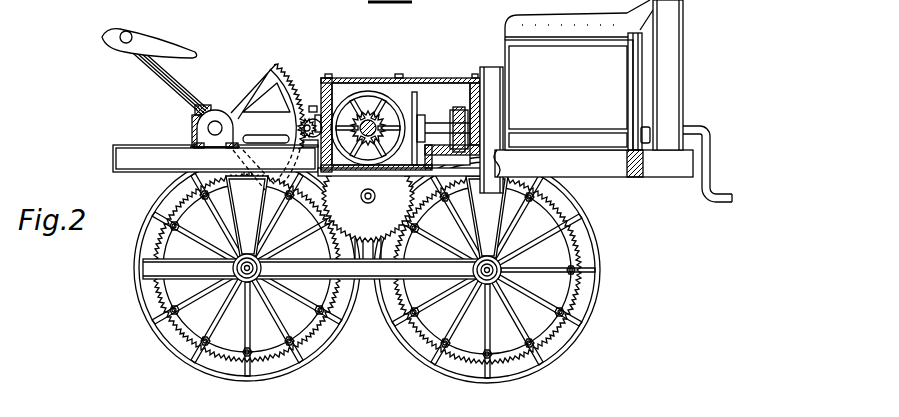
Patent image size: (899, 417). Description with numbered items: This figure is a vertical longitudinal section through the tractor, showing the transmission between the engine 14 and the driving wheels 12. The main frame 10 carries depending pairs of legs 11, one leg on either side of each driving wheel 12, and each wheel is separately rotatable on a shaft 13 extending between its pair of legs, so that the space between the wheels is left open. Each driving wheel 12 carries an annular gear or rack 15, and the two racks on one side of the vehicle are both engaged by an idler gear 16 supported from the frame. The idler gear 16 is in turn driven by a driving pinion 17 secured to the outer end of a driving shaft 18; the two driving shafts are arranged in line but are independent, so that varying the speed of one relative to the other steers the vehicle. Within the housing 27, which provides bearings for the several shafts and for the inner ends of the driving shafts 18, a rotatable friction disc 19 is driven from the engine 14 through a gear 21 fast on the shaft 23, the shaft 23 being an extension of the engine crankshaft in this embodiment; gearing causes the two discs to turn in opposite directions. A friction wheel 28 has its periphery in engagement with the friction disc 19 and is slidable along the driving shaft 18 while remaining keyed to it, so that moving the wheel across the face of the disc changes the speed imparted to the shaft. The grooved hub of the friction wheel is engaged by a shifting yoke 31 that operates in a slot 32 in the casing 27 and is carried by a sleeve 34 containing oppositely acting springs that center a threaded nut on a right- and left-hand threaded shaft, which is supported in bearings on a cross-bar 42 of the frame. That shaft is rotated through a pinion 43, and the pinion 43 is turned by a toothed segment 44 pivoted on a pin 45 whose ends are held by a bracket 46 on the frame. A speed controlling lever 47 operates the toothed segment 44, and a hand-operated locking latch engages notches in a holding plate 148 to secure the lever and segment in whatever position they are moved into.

The main frame 10 is at (128, 145).
The legs 11 is at (367, 217).
The driving wheels 12 is at (168, 222).
The shaft 13 is at (172, 334).
The engine 14 is at (613, 101).
The annular gear or rack 15 is at (153, 288).
The idler gear 16 is at (368, 204).
The driving pinion 17 is at (387, 108).
The driving shaft 18 is at (356, 112).
The friction disc 19 is at (425, 116).
The gear 21 is at (476, 77).
The shaft 23 is at (459, 107).
The housing 27 is at (368, 79).
The friction wheel 28 is at (414, 92).
The shifting yoke 31 is at (328, 76).
The slot 32 is at (310, 112).
The sleeve 34 is at (289, 68).
The cross-bar 42 is at (272, 228).
The pinion 43 is at (306, 118).
The toothed segment 44 is at (275, 73).
The shaft or pin 45 is at (216, 120).
The bracket 46 is at (205, 134).
The speed controlling lever 47 is at (160, 80).
The holding plate 148 is at (194, 118).